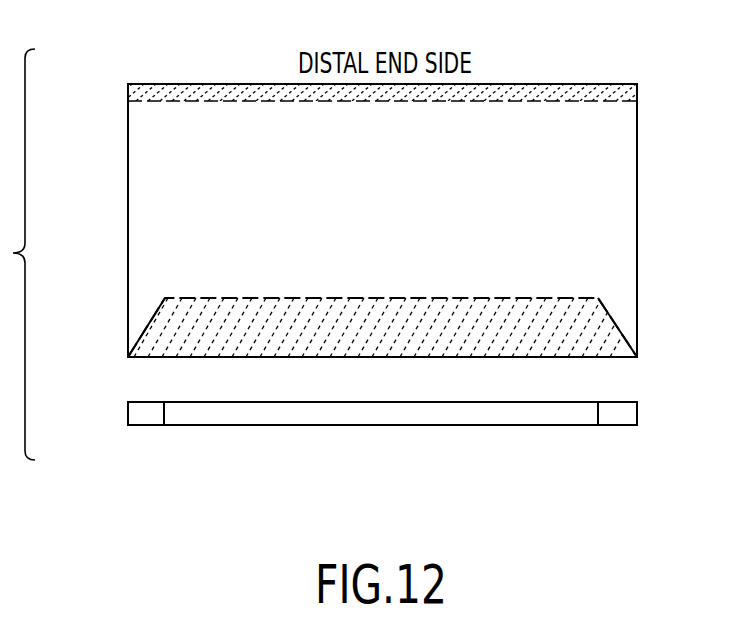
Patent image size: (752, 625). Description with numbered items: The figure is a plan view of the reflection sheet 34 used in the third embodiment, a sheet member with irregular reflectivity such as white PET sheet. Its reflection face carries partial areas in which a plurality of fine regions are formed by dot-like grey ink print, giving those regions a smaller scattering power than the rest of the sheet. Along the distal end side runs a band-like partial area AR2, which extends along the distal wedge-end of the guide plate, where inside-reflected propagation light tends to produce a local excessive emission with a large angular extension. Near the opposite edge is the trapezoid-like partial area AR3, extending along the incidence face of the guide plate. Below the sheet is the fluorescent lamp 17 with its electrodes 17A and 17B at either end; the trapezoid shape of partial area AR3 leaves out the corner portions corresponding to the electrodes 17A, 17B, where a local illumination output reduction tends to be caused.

The reflection sheet 34 is at (155, 233).
The partial area AR2 is at (515, 94).
The partial area AR3 is at (595, 330).
The fluorescent lamp 17 is at (392, 413).
The electrode 17A is at (615, 415).
The electrode 17B is at (153, 413).